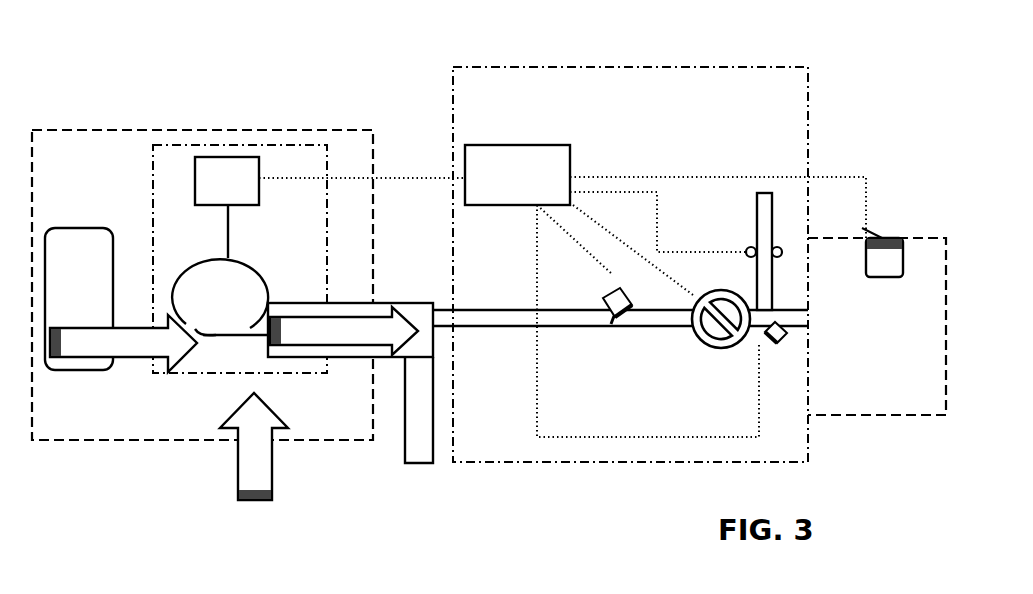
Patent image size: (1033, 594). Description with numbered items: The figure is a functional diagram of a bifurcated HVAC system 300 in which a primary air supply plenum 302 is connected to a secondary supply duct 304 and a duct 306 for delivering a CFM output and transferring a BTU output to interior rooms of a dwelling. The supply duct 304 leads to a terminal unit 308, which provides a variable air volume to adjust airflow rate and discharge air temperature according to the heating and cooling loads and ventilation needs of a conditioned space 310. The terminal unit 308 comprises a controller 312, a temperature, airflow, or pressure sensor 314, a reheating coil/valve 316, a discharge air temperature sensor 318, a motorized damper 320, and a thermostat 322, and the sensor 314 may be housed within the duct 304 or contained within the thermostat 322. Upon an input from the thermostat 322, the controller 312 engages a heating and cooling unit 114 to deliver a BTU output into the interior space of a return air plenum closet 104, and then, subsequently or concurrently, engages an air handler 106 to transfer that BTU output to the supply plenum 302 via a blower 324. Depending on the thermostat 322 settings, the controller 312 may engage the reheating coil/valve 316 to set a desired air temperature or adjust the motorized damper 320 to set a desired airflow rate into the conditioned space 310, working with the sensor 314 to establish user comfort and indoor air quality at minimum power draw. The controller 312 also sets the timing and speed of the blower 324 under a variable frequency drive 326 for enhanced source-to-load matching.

The bifurcated HVAC system 300 is at (122, 78).
The return air plenum closet 104 is at (153, 130).
The air handler 106 is at (287, 145).
The heating and cooling unit 114 is at (63, 228).
The primary air supply plenum 302 is at (295, 303).
The secondary supply duct 304 is at (527, 327).
The duct 306 is at (423, 450).
The terminal unit 308 is at (665, 462).
The conditioned space 310 is at (922, 415).
The controller 312 is at (503, 145).
The temperature, airflow, or pressure sensor 314 is at (609, 327).
The reheating coil/valve 316 is at (750, 250).
The discharge air temperature sensor 318 is at (780, 345).
The motorized damper 320 is at (719, 347).
The thermostat 322 is at (890, 260).
The blower 324 is at (200, 334).
The variable frequency drive 326 is at (228, 157).